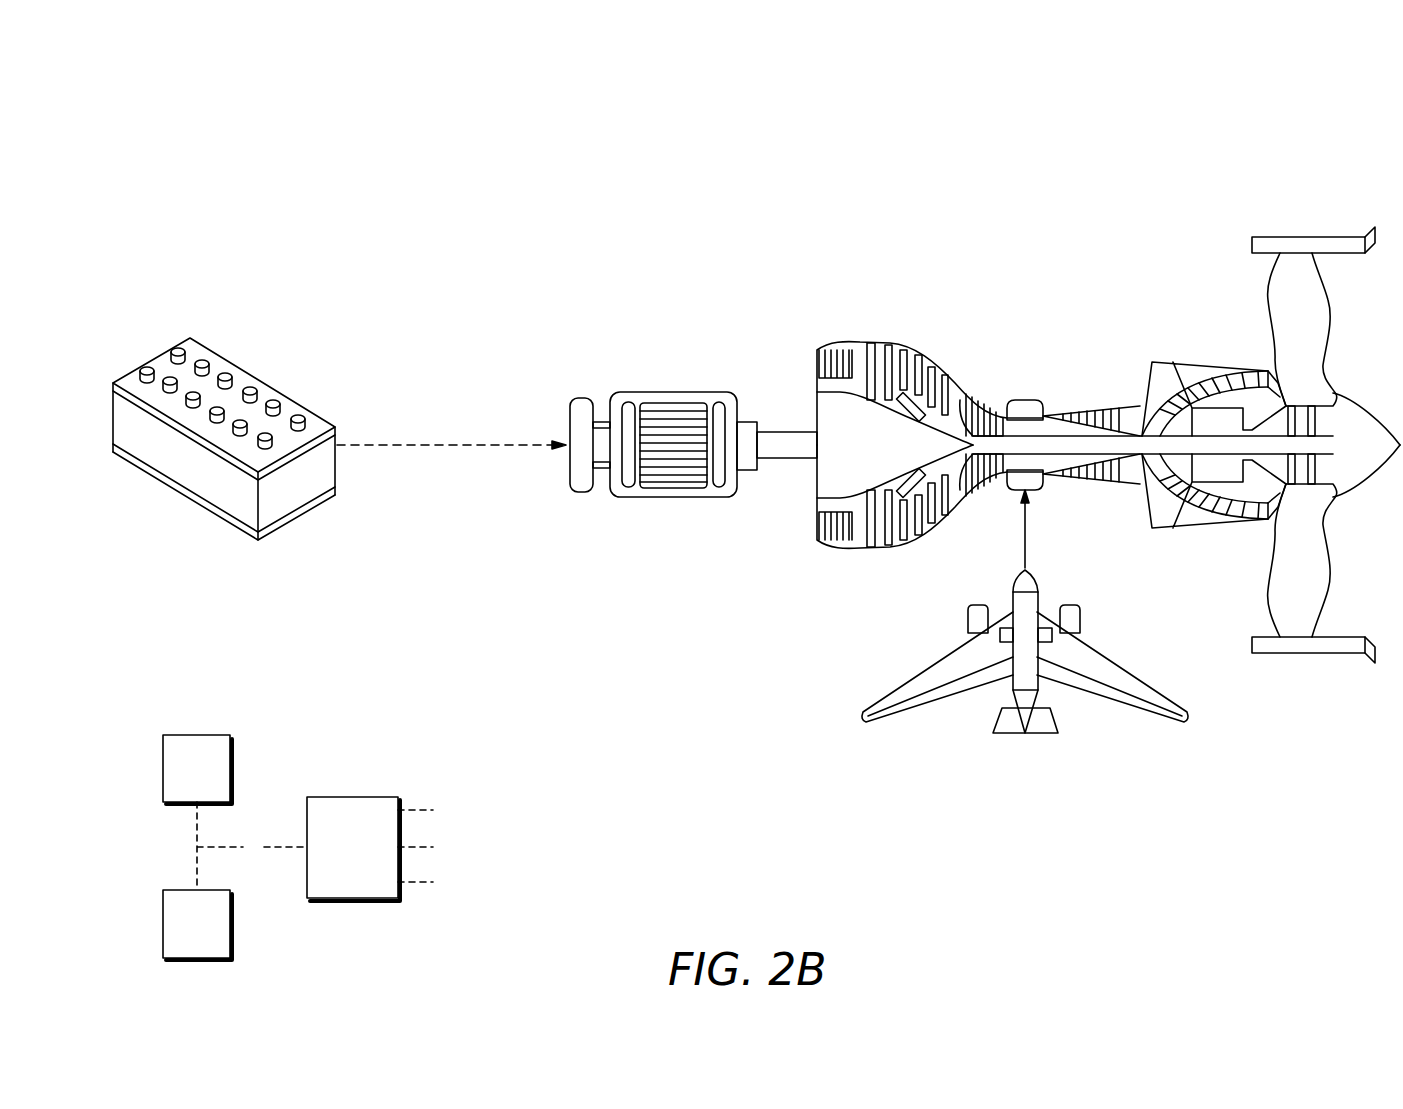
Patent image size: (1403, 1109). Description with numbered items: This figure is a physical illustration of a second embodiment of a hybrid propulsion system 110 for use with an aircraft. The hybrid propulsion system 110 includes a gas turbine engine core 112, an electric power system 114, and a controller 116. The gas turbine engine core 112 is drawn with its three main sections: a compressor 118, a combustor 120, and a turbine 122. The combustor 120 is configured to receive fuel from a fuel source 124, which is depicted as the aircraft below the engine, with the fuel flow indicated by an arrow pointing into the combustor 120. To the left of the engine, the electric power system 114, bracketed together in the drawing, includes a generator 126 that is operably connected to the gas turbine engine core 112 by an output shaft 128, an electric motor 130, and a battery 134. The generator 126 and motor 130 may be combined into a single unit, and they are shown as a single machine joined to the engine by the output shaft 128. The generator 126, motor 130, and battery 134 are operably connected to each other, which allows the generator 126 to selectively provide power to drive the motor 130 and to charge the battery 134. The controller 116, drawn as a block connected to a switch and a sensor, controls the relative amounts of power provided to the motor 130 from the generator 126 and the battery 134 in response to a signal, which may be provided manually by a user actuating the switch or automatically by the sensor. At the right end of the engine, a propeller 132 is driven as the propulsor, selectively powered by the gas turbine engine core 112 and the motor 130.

The hybrid propulsion system 110 is at (194, 163).
The gas turbine engine core 112 is at (896, 569).
The electric power system 114 is at (818, 642).
The controller 116 is at (673, 392).
The compressor 118 is at (577, 358).
The combustor 120 is at (1025, 384).
The turbine 122 is at (1182, 349).
The fuel source 124 is at (1013, 760).
The generator 126 is at (652, 476).
The output shaft 128 is at (787, 430).
The electric motor 130 is at (699, 513).
The propeller 132 is at (1312, 686).
The battery 134 is at (300, 548).